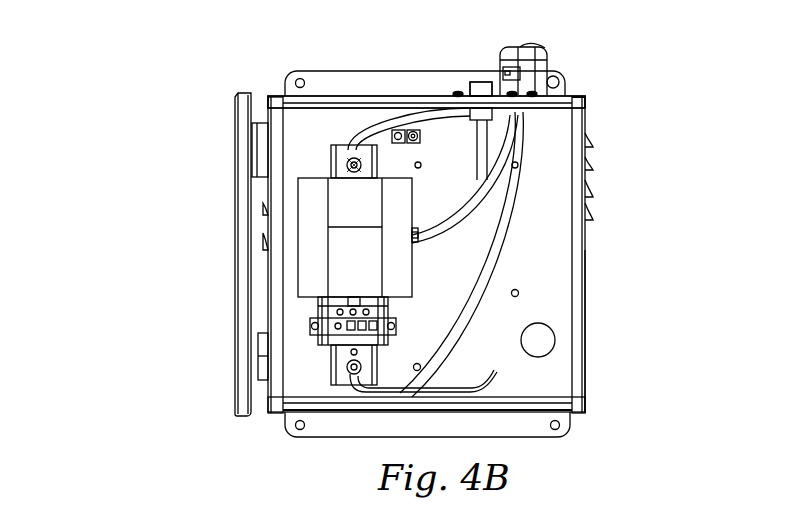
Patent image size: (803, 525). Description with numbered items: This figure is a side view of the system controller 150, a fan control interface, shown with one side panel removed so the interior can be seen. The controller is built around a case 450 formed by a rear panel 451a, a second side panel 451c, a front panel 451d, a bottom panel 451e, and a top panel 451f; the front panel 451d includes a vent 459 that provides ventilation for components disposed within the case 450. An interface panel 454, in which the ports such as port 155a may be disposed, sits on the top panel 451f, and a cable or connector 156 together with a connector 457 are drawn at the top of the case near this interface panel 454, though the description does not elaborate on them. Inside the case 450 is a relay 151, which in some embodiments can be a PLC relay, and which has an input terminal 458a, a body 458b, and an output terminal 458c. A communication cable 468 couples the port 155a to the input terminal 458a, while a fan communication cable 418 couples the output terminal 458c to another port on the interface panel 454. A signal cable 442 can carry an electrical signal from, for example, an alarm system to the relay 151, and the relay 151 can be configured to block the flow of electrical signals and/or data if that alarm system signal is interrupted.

The system controller 150 is at (160, 135).
The relay 151 is at (330, 230).
The port 155a is at (483, 81).
The cable 156 is at (538, 47).
The fan communication cable 418 is at (430, 93).
The signal cable 442 is at (460, 210).
The case 450 is at (587, 262).
The rear panel 451a is at (233, 273).
The second side panel 451c is at (572, 86).
The front panel 451d is at (588, 360).
The bottom panel 451e is at (576, 420).
The top panel 451f is at (360, 93).
The interface panel 454 is at (463, 83).
The connector 457 is at (512, 70).
The input terminal 458a is at (336, 372).
The body 458b is at (318, 300).
The output terminal 458c is at (335, 165).
The vent 459 is at (593, 195).
The communication cable 468 is at (492, 268).